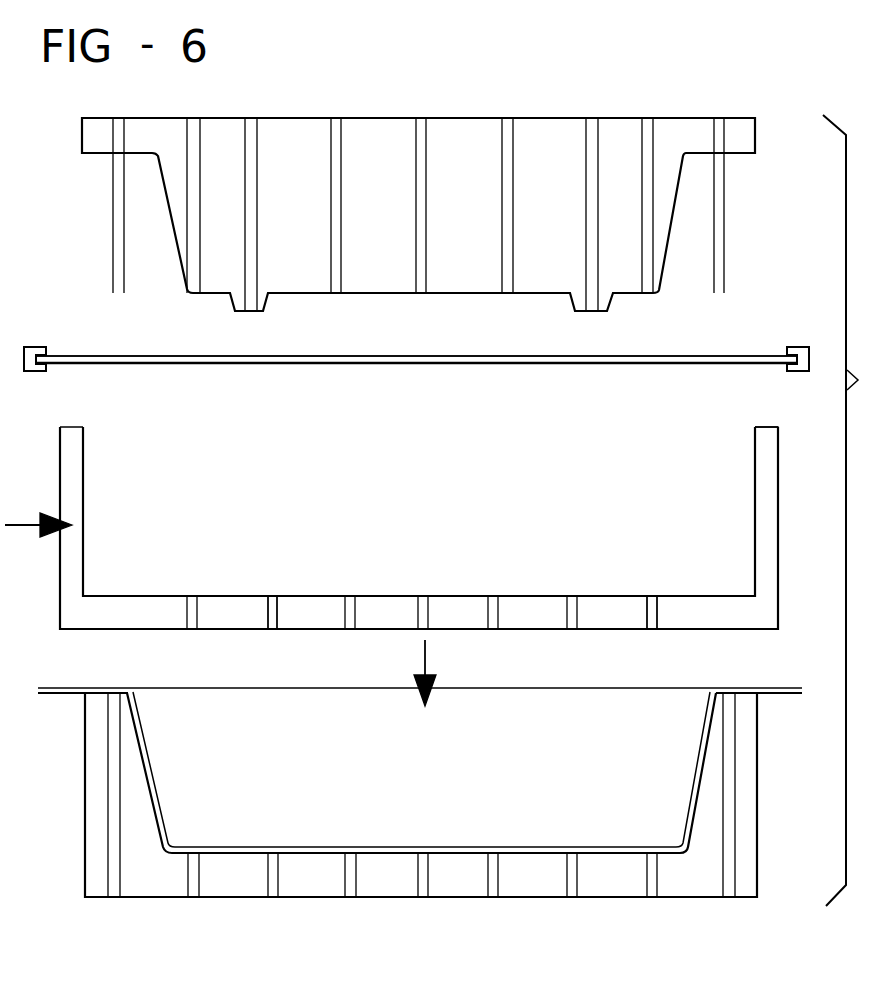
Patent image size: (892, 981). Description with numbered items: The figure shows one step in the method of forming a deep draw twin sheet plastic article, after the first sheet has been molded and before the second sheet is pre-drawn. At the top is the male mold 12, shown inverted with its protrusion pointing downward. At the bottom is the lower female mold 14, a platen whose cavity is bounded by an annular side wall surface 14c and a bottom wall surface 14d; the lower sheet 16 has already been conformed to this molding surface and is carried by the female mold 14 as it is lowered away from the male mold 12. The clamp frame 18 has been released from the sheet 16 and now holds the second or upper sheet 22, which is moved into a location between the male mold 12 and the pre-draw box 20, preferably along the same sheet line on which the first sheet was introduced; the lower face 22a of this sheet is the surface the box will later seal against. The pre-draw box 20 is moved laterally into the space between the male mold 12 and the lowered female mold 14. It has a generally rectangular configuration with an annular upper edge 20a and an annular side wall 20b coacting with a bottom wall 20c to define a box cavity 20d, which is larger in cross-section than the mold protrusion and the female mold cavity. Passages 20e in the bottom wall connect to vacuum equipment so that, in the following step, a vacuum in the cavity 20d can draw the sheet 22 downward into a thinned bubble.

The male mold 12 is at (130, 218).
The female mold 14 is at (424, 795).
The annular side wall surface 14c is at (708, 752).
The bottom wall surface 14d is at (322, 852).
The lower sheet 16 is at (490, 820).
The clamp frame 18 is at (35, 346).
The pre-draw box 20 is at (797, 560).
The annular upper edge 20a is at (72, 425).
The annular side wall 20b is at (83, 488).
The bottom wall 20c is at (441, 596).
The box cavity 20d is at (560, 566).
The passages 20e is at (272, 598).
The second sheet 22 is at (416, 385).
The lower face 22a is at (398, 376).